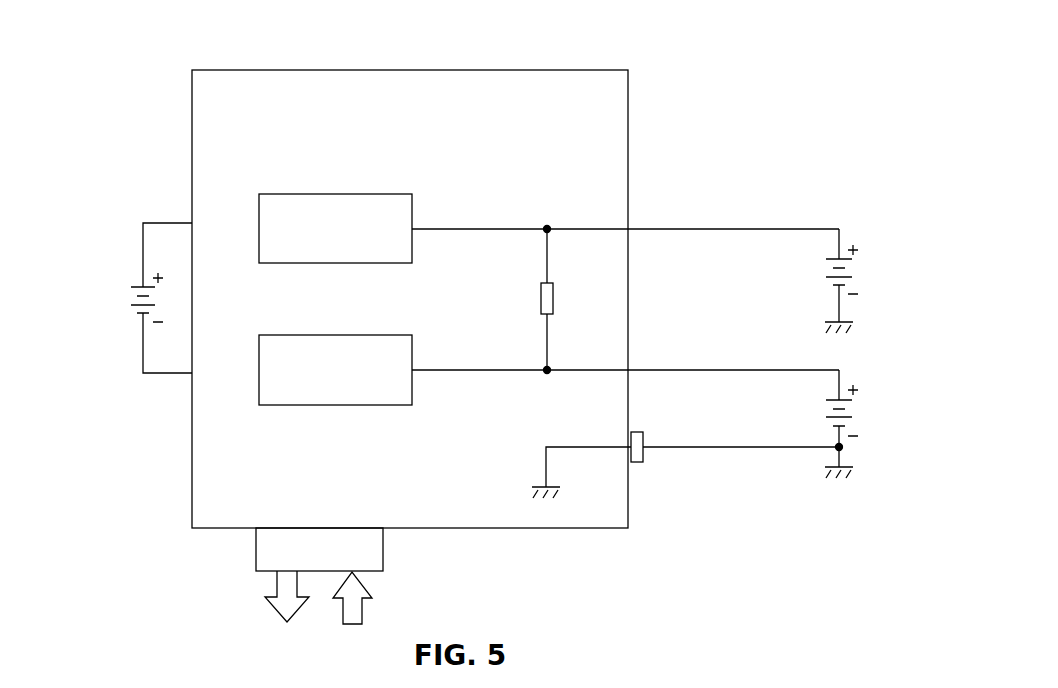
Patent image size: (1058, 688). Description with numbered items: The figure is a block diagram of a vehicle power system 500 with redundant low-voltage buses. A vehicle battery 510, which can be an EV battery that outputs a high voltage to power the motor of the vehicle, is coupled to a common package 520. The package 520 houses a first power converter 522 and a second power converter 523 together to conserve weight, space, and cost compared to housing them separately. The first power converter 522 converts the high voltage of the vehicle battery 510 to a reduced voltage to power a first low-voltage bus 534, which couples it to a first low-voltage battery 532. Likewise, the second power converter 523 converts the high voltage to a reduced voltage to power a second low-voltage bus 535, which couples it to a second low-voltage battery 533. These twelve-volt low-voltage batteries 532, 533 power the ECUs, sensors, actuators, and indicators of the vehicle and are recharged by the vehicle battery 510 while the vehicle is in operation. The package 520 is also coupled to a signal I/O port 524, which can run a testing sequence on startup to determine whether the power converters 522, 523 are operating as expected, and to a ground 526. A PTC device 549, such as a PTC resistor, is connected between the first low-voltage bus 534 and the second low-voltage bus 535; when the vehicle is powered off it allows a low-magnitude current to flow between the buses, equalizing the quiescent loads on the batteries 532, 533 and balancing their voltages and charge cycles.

The vehicle power system 500 is at (140, 34).
The vehicle battery 510 is at (177, 223).
The package 520 is at (256, 70).
The first power converter 522 is at (319, 194).
The second power converter 523 is at (319, 335).
The signal I/O port 524 is at (256, 552).
The ground 526 is at (644, 459).
The first low-voltage battery 532 is at (847, 248).
The second low-voltage battery 533 is at (860, 482).
The first low-voltage bus 534 is at (718, 231).
The second low-voltage bus 535 is at (720, 368).
The PTC device 549 is at (541, 287).